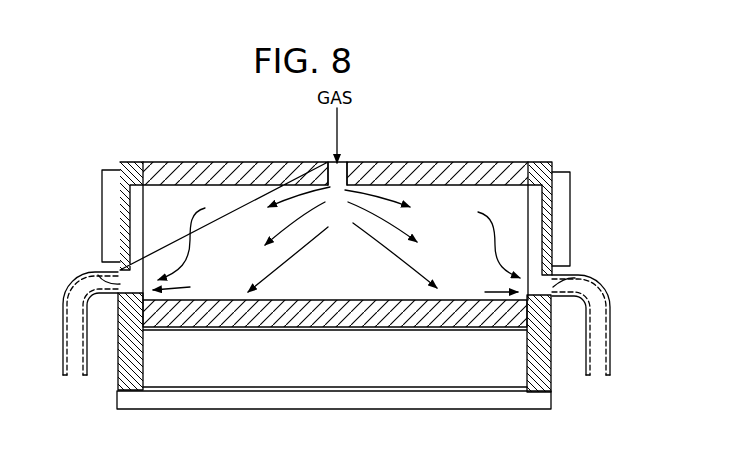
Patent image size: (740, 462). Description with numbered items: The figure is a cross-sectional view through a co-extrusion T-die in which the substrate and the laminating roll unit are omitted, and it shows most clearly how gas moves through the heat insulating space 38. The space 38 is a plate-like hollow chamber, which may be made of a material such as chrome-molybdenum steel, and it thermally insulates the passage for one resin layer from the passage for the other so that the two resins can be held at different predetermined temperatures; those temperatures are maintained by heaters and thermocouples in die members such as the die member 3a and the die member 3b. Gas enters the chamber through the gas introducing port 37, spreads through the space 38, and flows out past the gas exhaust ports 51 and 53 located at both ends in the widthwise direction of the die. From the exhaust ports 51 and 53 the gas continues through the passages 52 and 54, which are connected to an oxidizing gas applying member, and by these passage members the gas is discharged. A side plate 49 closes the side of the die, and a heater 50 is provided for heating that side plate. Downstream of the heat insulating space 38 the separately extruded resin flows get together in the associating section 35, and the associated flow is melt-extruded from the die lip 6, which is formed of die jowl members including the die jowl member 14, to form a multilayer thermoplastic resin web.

The die member 3a is at (468, 380).
The die member 3b is at (287, 105).
The die lip 6 is at (268, 410).
The die jowl member 14 is at (386, 402).
The associating section 35 is at (253, 327).
The gas introducing port 37 is at (337, 178).
The heat insulating space 38 is at (457, 200).
The side plate 49 is at (134, 165).
The heater for the side plate 50 is at (105, 192).
The gas exhaust port 51 is at (97, 270).
The passage 52 is at (70, 289).
The gas exhaust port 53 is at (550, 285).
The passage 54 is at (612, 291).